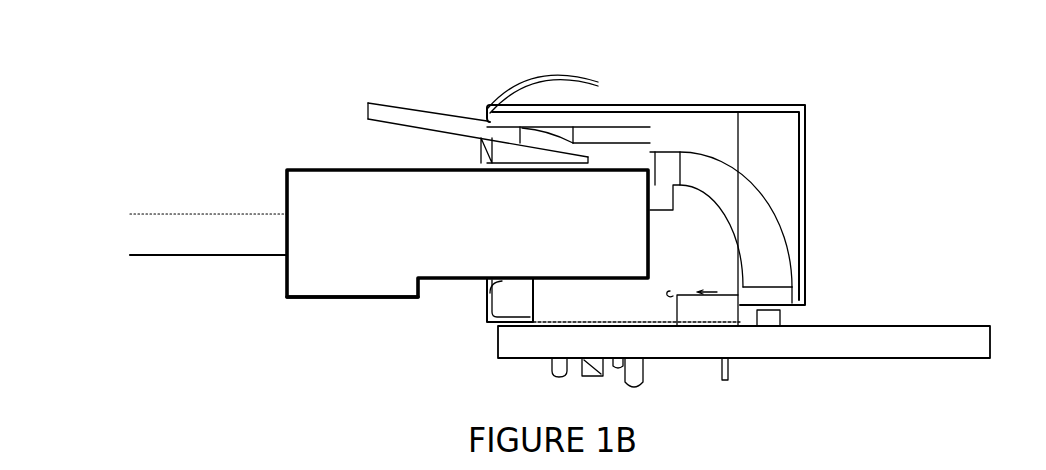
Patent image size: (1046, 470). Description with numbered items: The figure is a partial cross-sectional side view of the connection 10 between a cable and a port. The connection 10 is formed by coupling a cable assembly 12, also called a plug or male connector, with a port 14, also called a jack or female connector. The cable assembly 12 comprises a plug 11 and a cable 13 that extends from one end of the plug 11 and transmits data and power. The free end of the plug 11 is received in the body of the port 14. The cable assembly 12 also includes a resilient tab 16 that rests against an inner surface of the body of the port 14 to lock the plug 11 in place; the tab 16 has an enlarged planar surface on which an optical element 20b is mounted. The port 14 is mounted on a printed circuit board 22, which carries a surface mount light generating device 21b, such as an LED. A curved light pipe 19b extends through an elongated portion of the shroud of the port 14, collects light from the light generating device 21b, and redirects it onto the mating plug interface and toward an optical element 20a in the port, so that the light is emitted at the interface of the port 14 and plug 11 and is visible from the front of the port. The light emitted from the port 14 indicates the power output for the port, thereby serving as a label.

The connection 10 is at (537, 49).
The plug 11 is at (404, 298).
The cable assembly 12 is at (291, 168).
The cable 13 is at (198, 255).
The port 14 is at (757, 103).
The resilient tab 16 is at (450, 120).
The curved light pipe 19b is at (755, 207).
The optical element 20a is at (650, 173).
The optical element 20b is at (667, 147).
The surface mount light generating device 21b is at (782, 320).
The printed circuit board 22 is at (793, 358).